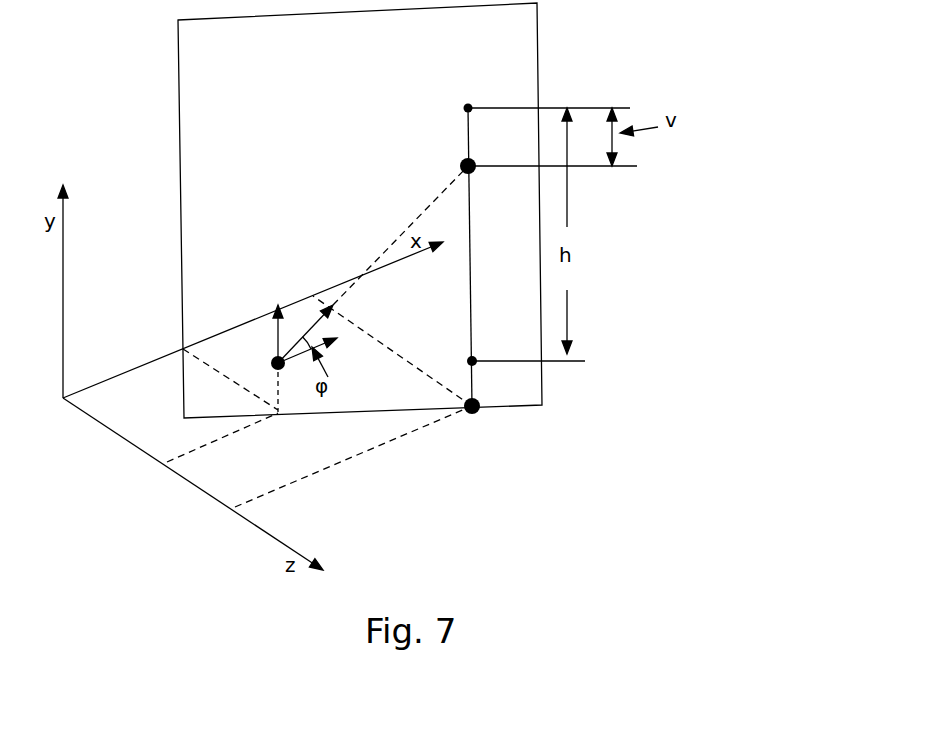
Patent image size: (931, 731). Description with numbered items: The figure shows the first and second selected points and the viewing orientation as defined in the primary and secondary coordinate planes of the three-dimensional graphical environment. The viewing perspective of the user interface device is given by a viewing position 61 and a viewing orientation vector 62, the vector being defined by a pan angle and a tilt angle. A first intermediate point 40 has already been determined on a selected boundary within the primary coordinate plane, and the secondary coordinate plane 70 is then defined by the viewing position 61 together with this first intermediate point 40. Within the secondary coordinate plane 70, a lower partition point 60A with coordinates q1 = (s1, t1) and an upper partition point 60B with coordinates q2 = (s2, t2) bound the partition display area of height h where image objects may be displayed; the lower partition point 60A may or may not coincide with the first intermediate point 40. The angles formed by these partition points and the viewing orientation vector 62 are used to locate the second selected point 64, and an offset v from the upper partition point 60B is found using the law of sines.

The secondary coordinate plane 70 is at (224, 66).
The upper partition point 60B is at (452, 101).
The lower partition point 60A is at (486, 365).
The second selected point 64 is at (450, 154).
The viewing orientation vector 62 is at (305, 325).
The viewing position 61 is at (290, 358).
The first intermediate point 40 is at (488, 424).